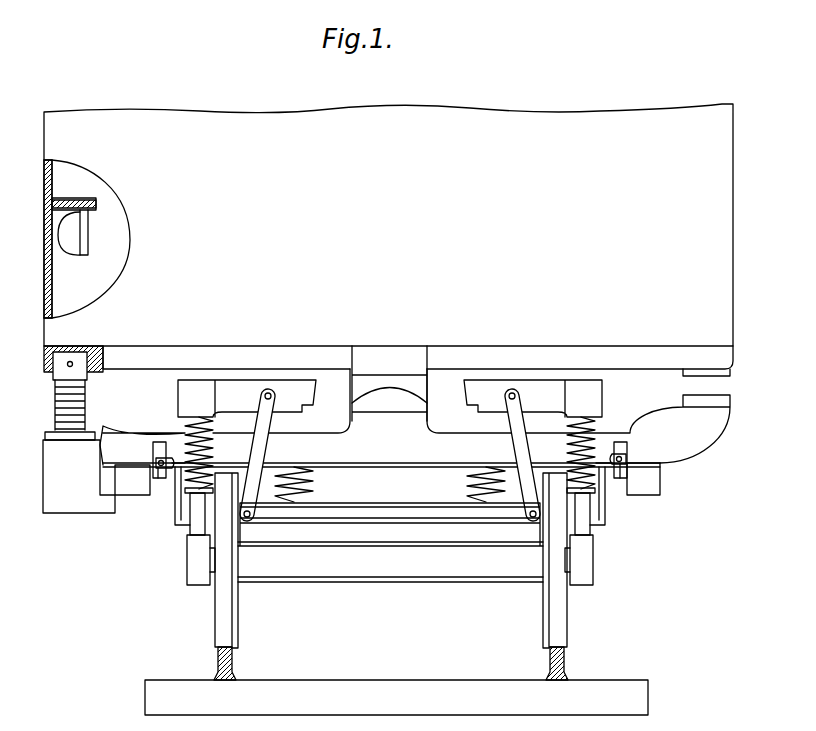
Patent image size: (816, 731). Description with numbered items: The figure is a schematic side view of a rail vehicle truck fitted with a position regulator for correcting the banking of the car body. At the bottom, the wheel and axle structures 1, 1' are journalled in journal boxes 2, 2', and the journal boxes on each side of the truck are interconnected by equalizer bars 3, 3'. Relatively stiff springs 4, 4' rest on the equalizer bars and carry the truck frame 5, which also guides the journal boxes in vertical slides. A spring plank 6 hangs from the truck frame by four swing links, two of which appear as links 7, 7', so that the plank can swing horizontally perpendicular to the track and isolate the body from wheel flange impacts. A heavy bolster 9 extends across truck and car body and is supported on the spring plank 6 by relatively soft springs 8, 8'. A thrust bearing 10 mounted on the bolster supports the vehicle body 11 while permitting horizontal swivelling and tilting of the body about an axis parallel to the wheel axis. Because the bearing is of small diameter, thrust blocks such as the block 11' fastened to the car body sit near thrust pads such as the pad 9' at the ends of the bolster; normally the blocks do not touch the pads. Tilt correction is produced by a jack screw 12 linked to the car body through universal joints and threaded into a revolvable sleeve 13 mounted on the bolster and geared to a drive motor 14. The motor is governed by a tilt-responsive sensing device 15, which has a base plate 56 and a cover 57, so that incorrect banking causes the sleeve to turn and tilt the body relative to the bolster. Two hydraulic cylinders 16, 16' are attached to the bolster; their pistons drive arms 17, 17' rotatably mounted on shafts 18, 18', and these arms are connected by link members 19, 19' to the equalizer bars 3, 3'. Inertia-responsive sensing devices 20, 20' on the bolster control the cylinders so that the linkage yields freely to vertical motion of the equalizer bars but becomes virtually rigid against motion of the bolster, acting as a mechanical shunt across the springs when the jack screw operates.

The wheel and axle structure 1 is at (246, 576).
The wheel and axle structure 1' is at (540, 576).
The journal box 2 is at (188, 560).
The journal box 2' is at (592, 560).
The equalizer bar 3 is at (183, 518).
The equalizer bar 3' is at (597, 518).
The stiff spring 4 is at (209, 455).
The stiff spring 4' is at (570, 455).
The truck frame 5 is at (300, 404).
The spring plank 6 is at (452, 505).
The swing link 7 is at (263, 455).
The swing link 7' is at (512, 455).
The soft spring 8 is at (305, 484).
The soft spring 8' is at (472, 482).
The bolster 9 is at (380, 418).
The thrust pad 9' is at (591, 416).
The thrust bearing 10 is at (420, 393).
The vehicle body 11 is at (405, 225).
The thrust block 11' is at (434, 360).
The jack screw 12 is at (88, 399).
The sleeve 13 is at (45, 437).
The drive motor 14 is at (45, 503).
The tilt-responsive sensing device 15 is at (88, 245).
The hydraulic cylinder 16 is at (156, 445).
The hydraulic cylinder 16' is at (629, 445).
The arm 17 is at (160, 487).
The arm 17' is at (628, 453).
The shaft 18 is at (156, 456).
The shaft 18' is at (638, 474).
The link member 19 is at (170, 498).
The link member 19' is at (613, 496).
The inertia-responsive sensing device 20 is at (132, 490).
The inertia-responsive sensing device 20' is at (652, 489).
The base plate 56 is at (86, 253).
The cover 57 is at (73, 255).